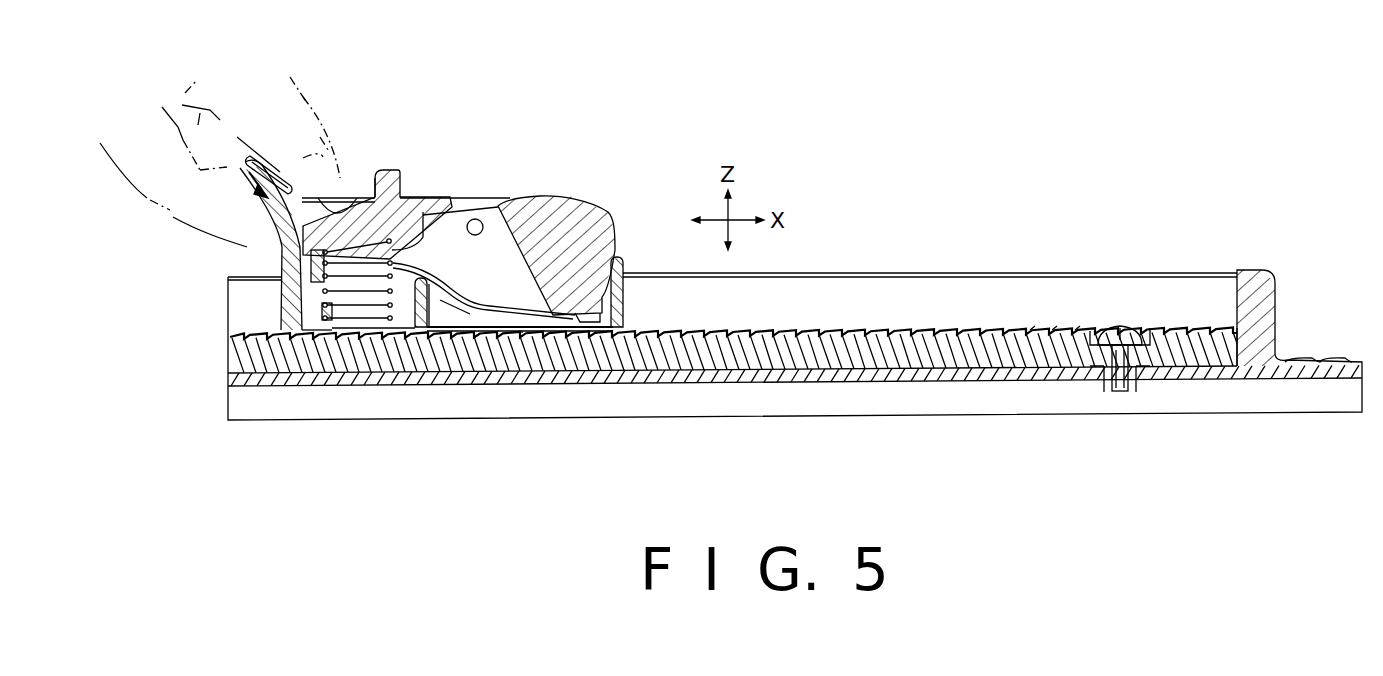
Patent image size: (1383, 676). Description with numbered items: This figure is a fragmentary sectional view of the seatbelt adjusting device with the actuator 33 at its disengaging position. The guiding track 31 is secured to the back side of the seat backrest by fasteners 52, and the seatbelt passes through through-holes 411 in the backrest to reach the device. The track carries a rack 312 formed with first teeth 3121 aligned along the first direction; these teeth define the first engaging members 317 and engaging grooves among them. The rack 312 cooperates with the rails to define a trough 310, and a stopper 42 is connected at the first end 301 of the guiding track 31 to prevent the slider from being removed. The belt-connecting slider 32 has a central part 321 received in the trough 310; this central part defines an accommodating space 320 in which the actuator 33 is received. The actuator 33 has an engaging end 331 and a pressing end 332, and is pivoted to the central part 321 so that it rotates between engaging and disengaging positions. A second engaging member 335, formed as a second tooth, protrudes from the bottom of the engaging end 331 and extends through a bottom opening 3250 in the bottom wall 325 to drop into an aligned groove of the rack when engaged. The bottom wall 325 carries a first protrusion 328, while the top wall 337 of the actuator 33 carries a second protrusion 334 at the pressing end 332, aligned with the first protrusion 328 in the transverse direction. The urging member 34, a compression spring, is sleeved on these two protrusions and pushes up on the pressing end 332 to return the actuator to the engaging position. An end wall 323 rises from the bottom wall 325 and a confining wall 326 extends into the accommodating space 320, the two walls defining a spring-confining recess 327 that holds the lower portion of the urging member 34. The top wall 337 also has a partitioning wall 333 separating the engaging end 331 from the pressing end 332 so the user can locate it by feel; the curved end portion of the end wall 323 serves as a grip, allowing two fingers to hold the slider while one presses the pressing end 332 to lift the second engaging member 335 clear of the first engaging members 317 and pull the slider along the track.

The belt-connecting slider 32 is at (240, 168).
The pressing end 332 is at (304, 232).
The end wall 323 is at (288, 265).
The first protrusion 328 is at (322, 286).
The spring-confining recess 327 is at (307, 308).
The bottom wall 325 is at (402, 325).
The urging member 34 is at (368, 292).
The actuator 33 is at (462, 188).
The partitioning wall 333 is at (379, 167).
The top wall 337 is at (372, 198).
The second protrusion 334 is at (431, 214).
The engaging end 331 is at (560, 198).
The second engaging member 335 is at (606, 330).
The confining wall 326 is at (463, 312).
The accommodating space 320 is at (528, 334).
The bottom opening 3250 is at (520, 334).
The central part 321 is at (630, 294).
The guiding track 31 is at (822, 258).
The trough 310 is at (797, 297).
The rack 312 is at (1011, 327).
The first engaging members 317 is at (953, 330).
The first teeth 3121 is at (1077, 330).
The fasteners 52 is at (1121, 336).
The through-holes 411 is at (1117, 382).
The first end 301 is at (1232, 290).
The stoppers 42 is at (1277, 303).